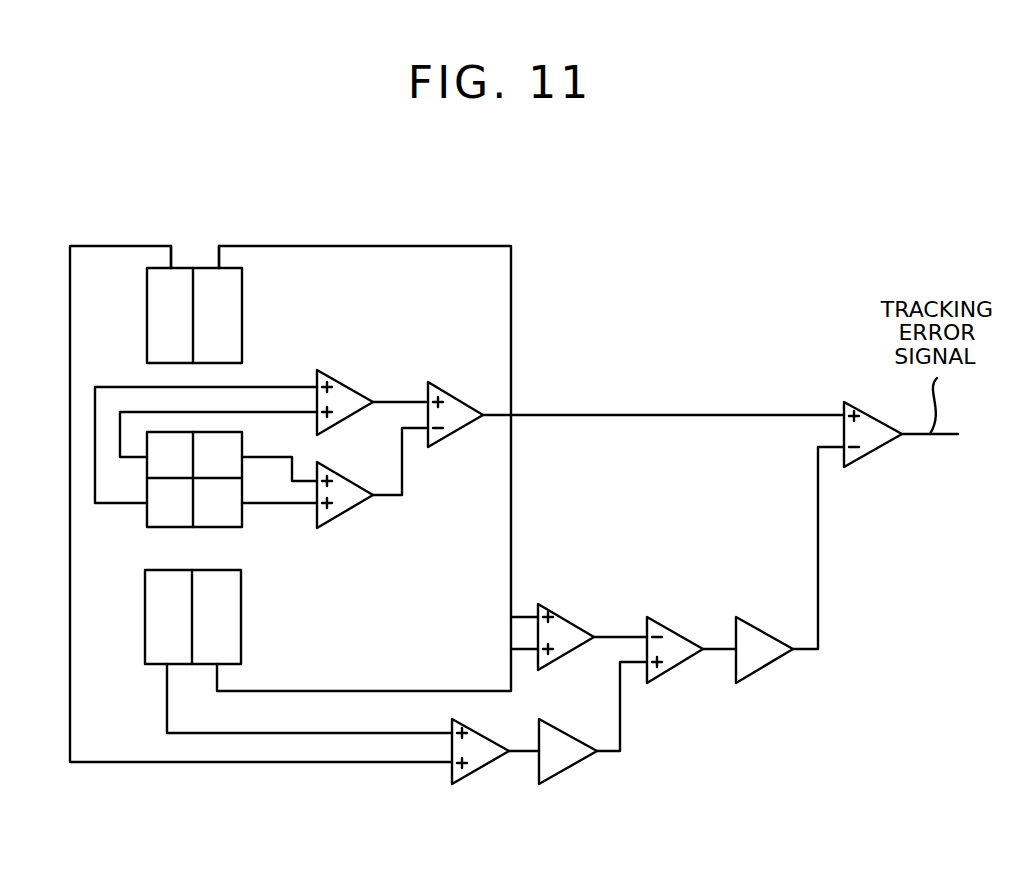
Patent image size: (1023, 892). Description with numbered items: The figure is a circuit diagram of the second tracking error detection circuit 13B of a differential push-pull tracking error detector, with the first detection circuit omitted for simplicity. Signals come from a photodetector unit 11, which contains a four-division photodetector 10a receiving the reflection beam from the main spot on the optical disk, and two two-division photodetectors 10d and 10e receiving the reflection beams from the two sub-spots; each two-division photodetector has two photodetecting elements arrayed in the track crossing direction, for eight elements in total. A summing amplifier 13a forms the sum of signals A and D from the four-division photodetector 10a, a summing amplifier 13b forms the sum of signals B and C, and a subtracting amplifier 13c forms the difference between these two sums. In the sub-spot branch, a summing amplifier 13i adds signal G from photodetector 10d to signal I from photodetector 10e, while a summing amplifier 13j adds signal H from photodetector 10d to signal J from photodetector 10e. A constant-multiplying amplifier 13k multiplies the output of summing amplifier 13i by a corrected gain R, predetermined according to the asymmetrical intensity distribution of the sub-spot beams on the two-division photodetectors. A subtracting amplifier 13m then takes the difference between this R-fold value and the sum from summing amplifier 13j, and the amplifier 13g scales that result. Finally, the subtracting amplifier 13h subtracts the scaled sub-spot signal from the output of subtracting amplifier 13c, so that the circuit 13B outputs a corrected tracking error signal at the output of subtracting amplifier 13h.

The photodetector unit 11 is at (200, 238).
The two-division photodetector 10d is at (147, 311).
The four-division photodetector 10a is at (147, 518).
The two-division photodetector 10e is at (145, 623).
The summing amplifier 13a is at (340, 370).
The summing amplifier 13b is at (348, 510).
The subtracting amplifier 13c is at (460, 432).
The summing amplifier 13j is at (562, 610).
The subtracting amplifier 13m is at (670, 670).
The amplifier 13g is at (773, 668).
The summing amplifier 13i is at (478, 773).
The constant-multiplying amplifier 13k is at (570, 770).
The subtracting amplifier 13h is at (880, 452).
The second tracking error detection circuit 13B is at (739, 362).